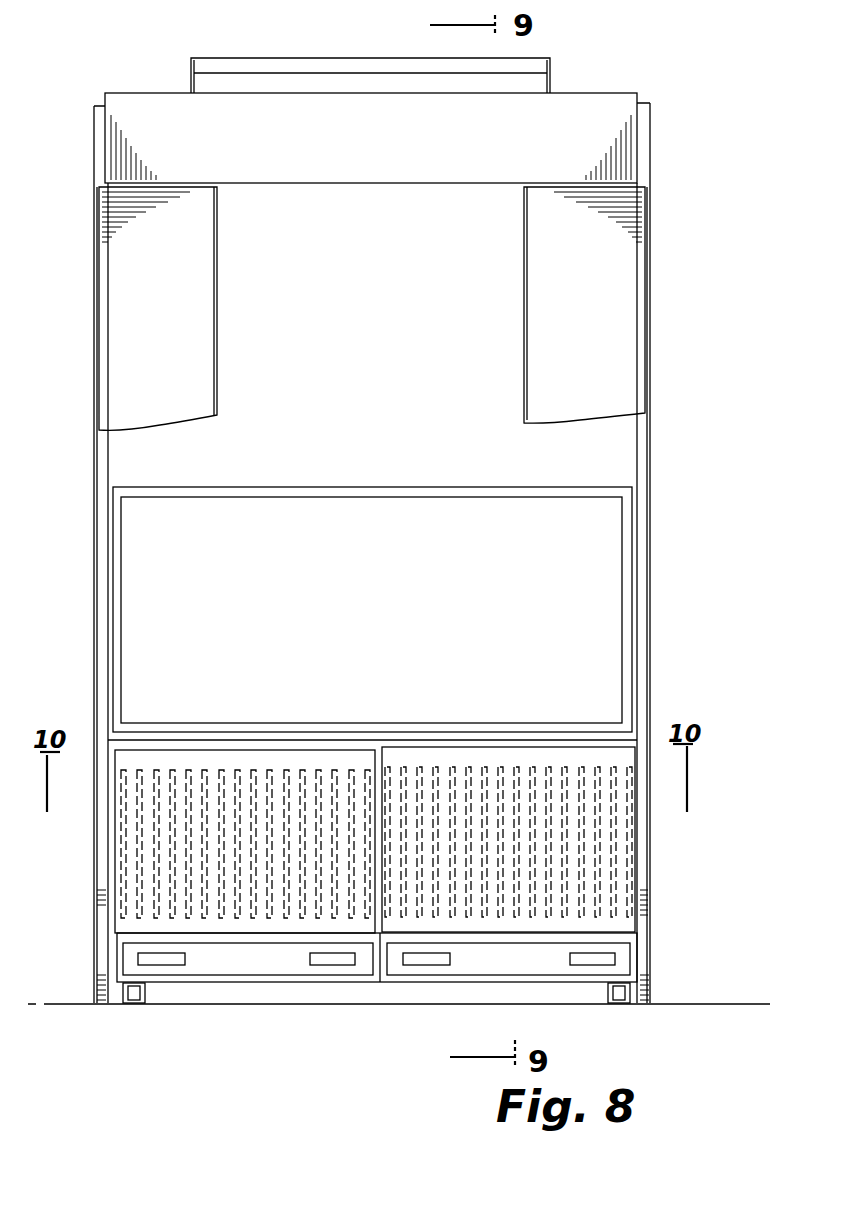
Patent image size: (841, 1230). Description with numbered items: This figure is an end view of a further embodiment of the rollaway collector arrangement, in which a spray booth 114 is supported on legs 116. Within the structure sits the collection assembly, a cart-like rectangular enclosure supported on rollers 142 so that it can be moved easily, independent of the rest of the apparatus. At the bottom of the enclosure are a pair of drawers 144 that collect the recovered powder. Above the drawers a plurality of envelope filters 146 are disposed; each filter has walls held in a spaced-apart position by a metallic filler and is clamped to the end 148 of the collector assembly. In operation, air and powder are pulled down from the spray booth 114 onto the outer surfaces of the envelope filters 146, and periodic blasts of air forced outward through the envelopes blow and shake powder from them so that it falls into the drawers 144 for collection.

The spray booth 114 is at (92, 300).
The legs 116 is at (107, 893).
The rollers 142 is at (132, 1003).
The drawers 144 is at (272, 968).
The envelope filters 146 is at (218, 768).
The end of the collector assembly 148 is at (120, 848).